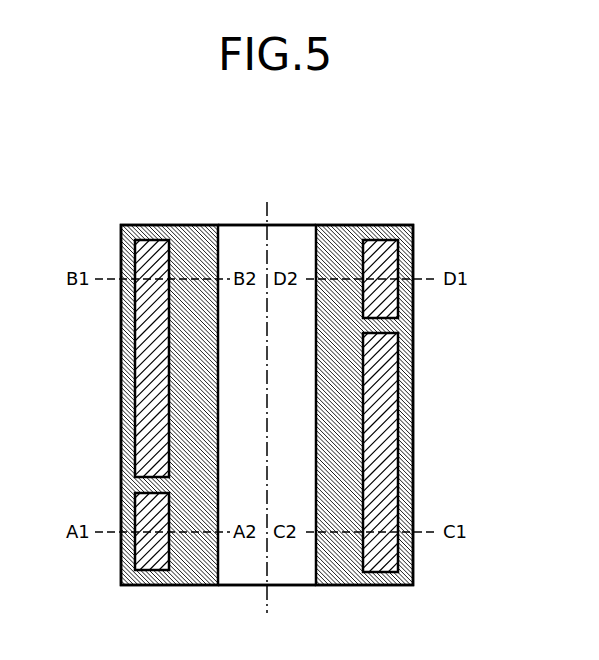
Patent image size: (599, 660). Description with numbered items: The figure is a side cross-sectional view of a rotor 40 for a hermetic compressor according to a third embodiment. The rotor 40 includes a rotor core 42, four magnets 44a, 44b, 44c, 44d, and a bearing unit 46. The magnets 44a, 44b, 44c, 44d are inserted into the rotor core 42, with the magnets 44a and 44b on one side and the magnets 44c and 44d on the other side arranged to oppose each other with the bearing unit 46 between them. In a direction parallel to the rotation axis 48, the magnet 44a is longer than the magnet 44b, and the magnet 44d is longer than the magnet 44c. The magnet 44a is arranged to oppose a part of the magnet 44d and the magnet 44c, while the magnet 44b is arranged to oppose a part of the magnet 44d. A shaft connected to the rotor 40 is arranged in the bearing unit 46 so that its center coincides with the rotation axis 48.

The rotor 40 is at (463, 169).
The rotor core 42 is at (165, 232).
The magnet 44a is at (145, 345).
The magnet 44b is at (150, 563).
The magnet 44c is at (380, 245).
The magnet 44d is at (391, 448).
The bearing unit 46 is at (232, 235).
The rotation axis 48 is at (271, 207).